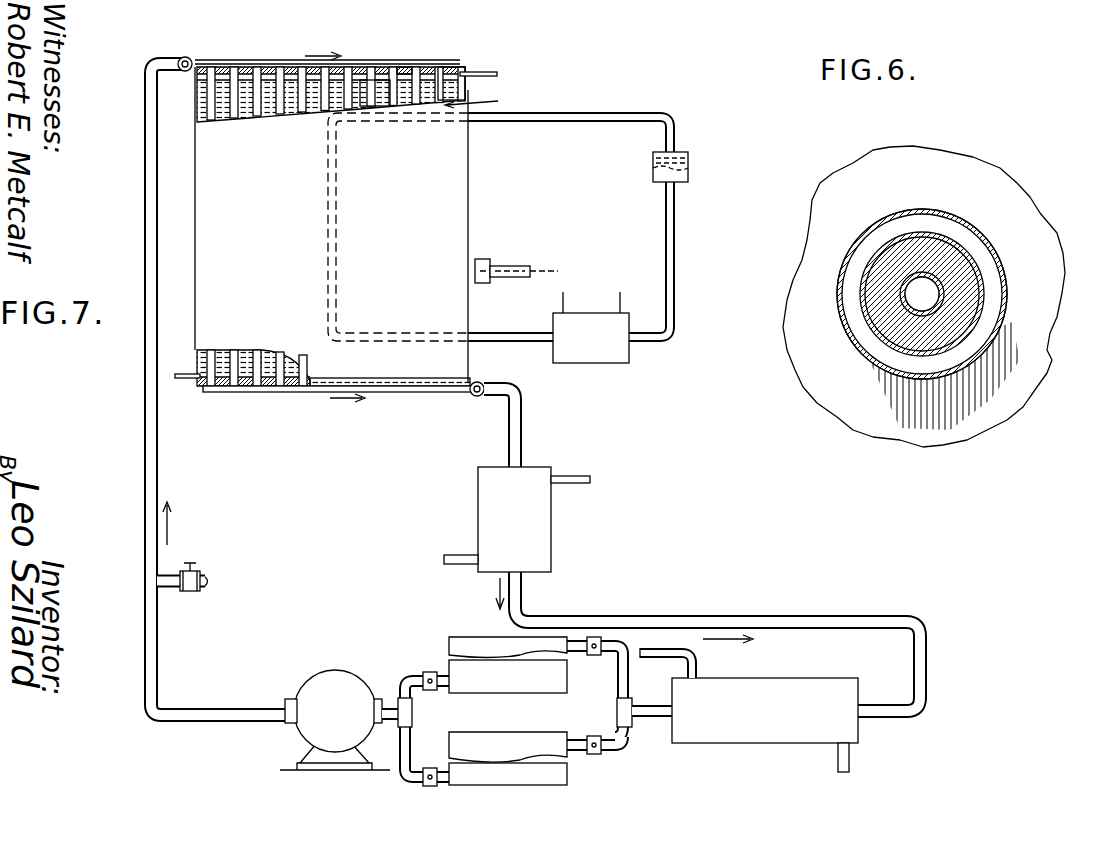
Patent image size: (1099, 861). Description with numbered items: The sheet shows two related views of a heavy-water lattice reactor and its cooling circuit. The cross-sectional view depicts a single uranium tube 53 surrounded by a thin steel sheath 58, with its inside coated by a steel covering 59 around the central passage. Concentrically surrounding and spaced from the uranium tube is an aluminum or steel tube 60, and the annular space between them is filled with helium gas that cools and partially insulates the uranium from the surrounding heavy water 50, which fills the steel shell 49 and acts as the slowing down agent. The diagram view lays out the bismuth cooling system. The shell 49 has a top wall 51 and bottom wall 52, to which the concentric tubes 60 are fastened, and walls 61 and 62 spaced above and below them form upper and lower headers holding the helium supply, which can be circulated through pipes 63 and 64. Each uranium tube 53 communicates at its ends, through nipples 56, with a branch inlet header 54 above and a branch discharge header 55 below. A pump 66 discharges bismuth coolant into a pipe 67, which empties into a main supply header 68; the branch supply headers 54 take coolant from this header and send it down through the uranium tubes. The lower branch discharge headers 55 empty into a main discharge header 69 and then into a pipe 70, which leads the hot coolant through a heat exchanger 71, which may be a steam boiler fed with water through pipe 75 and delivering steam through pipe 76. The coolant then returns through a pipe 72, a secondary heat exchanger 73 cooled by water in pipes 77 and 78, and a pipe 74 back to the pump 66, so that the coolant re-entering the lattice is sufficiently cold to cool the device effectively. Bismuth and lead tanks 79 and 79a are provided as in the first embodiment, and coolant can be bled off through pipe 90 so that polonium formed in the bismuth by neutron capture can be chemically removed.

In FIG. 7, the steel shell 49 is at (508, 224).
In FIG. 7, the heavy water 50 is at (222, 348).
In FIG. 7, the top wall 51 is at (444, 80).
In FIG. 7, the bottom wall 52 is at (250, 380).
In FIG. 6, the bottom wall 52 is at (910, 296).
In FIG. 6, the uranium tube 53 is at (942, 256).
In FIG. 7, the branch inlet header 54 is at (238, 61).
In FIG. 7, the branch discharge header 55 is at (393, 393).
In FIG. 7, the nipple 56 is at (392, 70).
In FIG. 6, the sheath 58 is at (880, 334).
In FIG. 6, the steel covering 59 is at (941, 291).
In FIG. 7, the aluminum or steel tube 60 is at (285, 105).
In FIG. 6, the aluminum or steel tube 60 is at (840, 328).
In FIG. 7, the upper header wall 61 is at (403, 72).
In FIG. 7, the lower header wall 62 is at (287, 380).
In FIG. 7, the gas pipe 63 is at (496, 74).
In FIG. 7, the gas pipe 64 is at (190, 380).
In FIG. 7, the pump 66 is at (345, 685).
In FIG. 7, the pipe 67 is at (154, 657).
In FIG. 7, the supply header 68 is at (186, 57).
In FIG. 7, the main discharge header 69 is at (474, 396).
In FIG. 7, the pipe 70 is at (508, 442).
In FIG. 7, the heat exchanger 71 is at (548, 515).
In FIG. 7, the pipe 72 is at (796, 614).
In FIG. 7, the secondary heat exchanger 73 is at (806, 680).
In FIG. 7, the pipe 74 is at (656, 719).
In FIG. 7, the pipe 75 is at (584, 477).
In FIG. 7, the pipe 76 is at (456, 556).
In FIG. 7, the pipe 77 is at (658, 654).
In FIG. 7, the pipe 78 is at (850, 757).
In FIG. 7, the bismuth tank 79 is at (508, 665).
In FIG. 7, the lead tank 79a is at (508, 758).
In FIG. 7, the pipe 90 is at (205, 579).